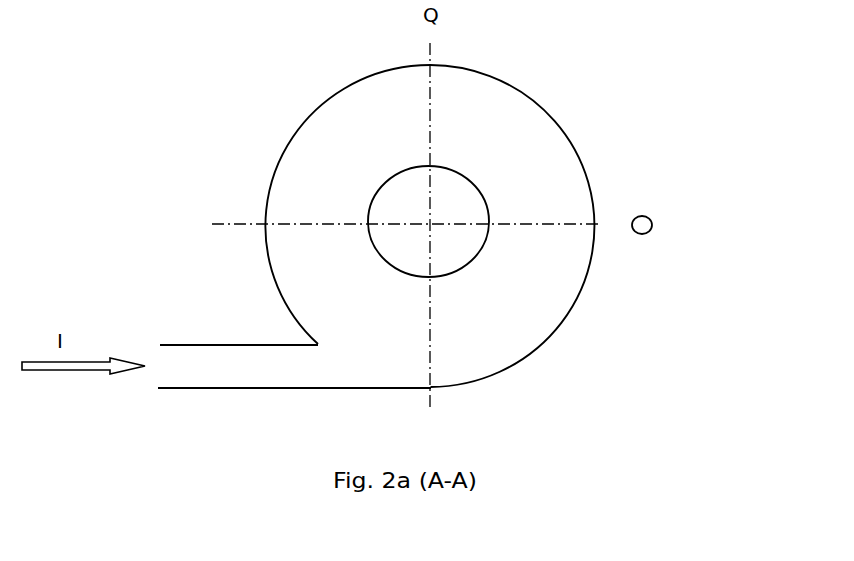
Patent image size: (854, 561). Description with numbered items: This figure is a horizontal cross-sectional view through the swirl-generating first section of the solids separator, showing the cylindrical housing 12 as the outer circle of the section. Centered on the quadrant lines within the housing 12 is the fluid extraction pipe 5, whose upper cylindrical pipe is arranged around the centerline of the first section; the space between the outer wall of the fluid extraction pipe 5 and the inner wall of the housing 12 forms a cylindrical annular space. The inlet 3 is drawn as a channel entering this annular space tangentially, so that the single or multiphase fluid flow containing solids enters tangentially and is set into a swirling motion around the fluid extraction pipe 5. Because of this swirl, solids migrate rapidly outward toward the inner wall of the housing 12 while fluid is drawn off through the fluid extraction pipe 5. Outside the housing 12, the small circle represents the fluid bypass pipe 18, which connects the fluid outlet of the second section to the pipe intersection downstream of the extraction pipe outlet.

The cylindrical housing 12 is at (585, 167).
The inlet 3 is at (163, 365).
The fluid extraction pipe 5 is at (480, 261).
The fluid bypass pipe 18 is at (653, 223).